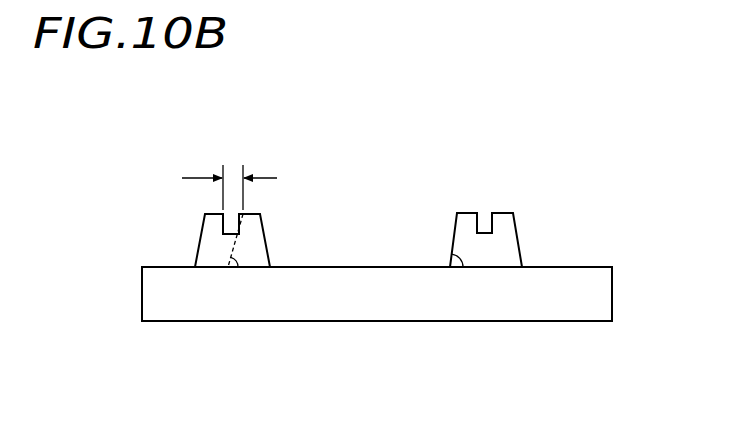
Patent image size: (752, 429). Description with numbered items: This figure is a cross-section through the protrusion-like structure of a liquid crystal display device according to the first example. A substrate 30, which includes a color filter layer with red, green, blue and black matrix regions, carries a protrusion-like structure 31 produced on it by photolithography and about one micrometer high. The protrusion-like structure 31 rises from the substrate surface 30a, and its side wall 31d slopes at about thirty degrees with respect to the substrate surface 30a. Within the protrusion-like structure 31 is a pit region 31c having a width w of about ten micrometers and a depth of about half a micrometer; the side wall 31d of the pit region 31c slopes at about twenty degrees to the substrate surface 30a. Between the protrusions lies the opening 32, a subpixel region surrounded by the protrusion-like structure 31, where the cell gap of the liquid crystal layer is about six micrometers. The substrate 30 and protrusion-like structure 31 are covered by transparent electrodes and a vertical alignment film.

The substrate 30 is at (152, 300).
The substrate surface 30a is at (573, 266).
The protrusion-like structure 31 is at (513, 240).
The pit region 31c is at (496, 201).
The side wall 31d is at (480, 212).
The opening 32 is at (342, 213).
The width of pit region w is at (238, 162).